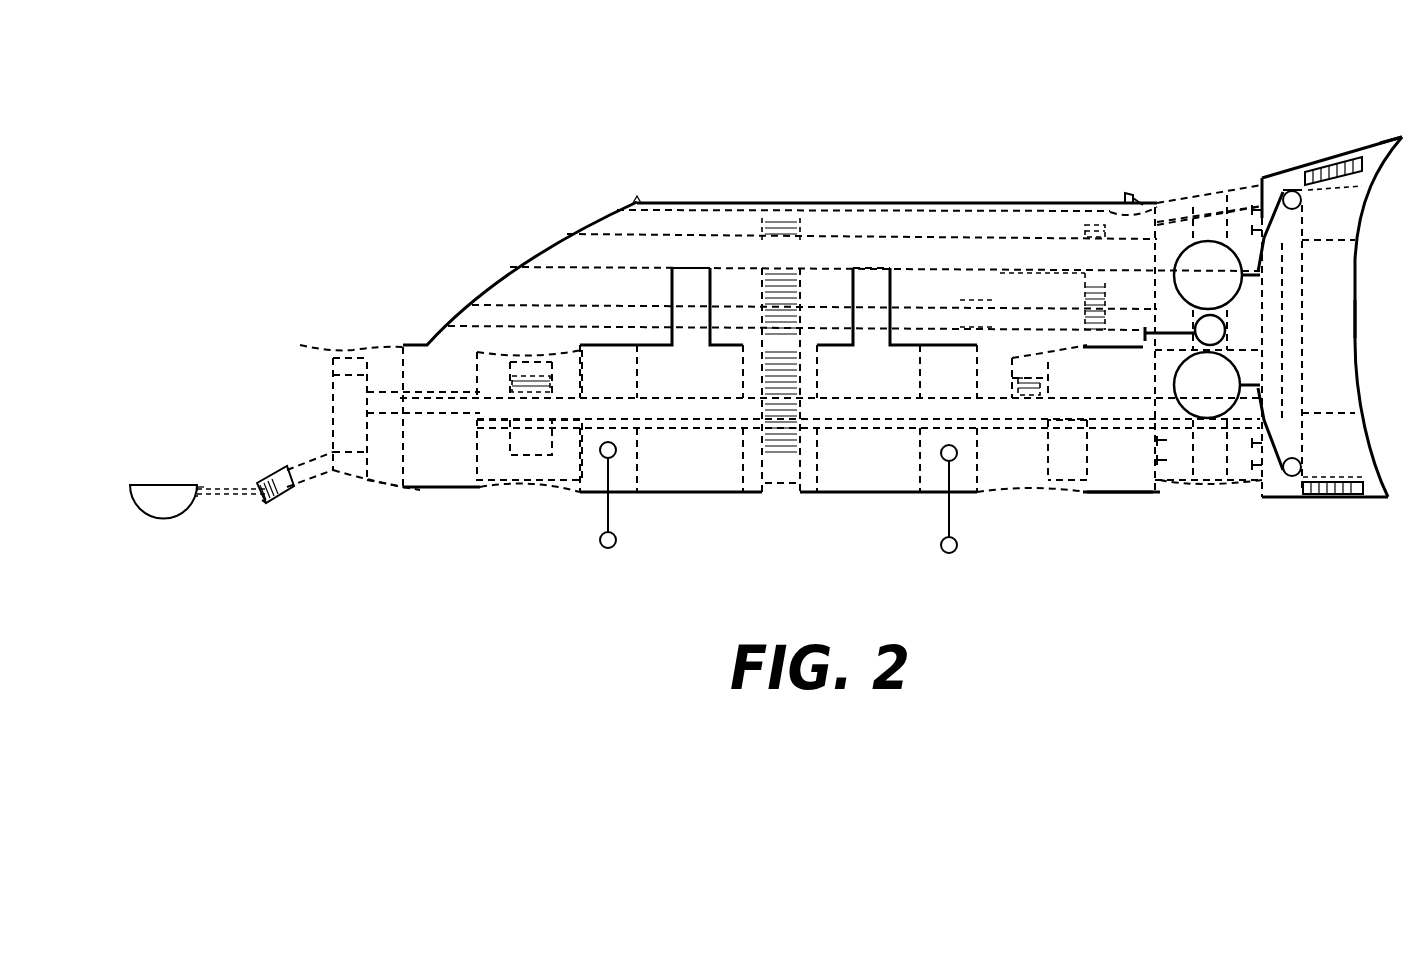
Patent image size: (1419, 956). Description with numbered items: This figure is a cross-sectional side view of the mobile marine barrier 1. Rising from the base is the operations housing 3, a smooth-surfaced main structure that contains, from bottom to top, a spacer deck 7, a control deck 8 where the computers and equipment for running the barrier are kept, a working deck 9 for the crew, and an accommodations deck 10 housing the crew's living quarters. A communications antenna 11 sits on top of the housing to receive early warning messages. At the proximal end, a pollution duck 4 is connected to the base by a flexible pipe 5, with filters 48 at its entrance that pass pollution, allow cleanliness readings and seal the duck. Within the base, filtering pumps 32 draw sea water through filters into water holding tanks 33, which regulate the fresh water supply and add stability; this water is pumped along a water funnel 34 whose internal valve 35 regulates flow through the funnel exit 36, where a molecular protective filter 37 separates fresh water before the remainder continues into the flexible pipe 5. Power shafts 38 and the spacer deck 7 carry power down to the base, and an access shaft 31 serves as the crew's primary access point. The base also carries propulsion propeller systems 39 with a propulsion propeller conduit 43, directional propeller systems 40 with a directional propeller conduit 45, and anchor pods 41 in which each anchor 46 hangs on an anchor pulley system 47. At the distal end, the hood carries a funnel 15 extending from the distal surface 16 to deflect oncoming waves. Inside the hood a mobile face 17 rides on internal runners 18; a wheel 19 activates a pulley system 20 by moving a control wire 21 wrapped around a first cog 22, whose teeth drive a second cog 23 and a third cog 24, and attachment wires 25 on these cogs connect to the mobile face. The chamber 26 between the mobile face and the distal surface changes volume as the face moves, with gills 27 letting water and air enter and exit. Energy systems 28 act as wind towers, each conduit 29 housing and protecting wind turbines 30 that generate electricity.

The mobile marine barrier 1 is at (318, 150).
The operations housing 3 is at (571, 235).
The pollution duck 4 is at (165, 519).
The flexible pipe 5 is at (225, 500).
The spacer deck 7 is at (977, 321).
The control deck 8 is at (978, 293).
The working deck 9 is at (1035, 287).
The accommodations deck 10 is at (1033, 224).
The communications antenna 11 is at (1127, 197).
The funnel 15 is at (1384, 142).
The distal surface 16 is at (1358, 258).
The mobile face 17 is at (1303, 413).
The internal runners 18 is at (1310, 188).
The wheel 19 is at (1145, 340).
The pulley system 20 is at (1156, 394).
The control wire 21 is at (1168, 328).
The first cog 22 is at (1227, 330).
The second cog 23 is at (1228, 250).
The third cog 24 is at (1228, 411).
The attachment wires 25 is at (1253, 268).
The chamber 26 is at (1328, 266).
The gills 27 is at (1341, 162).
The energy systems 28 is at (1195, 505).
The conduit 29 is at (1207, 223).
The wind turbines 30 is at (1257, 215).
The access shaft 31 is at (778, 498).
The filtering pumps 32 is at (778, 460).
The water holding tanks 33 is at (778, 371).
The water funnel 34 is at (528, 422).
The internal valve 35 is at (415, 408).
The funnel exit 36 is at (300, 345).
The molecular protective filter 37 is at (262, 483).
The power shafts 38 is at (778, 306).
The propulsion propeller systems 39 is at (368, 488).
The directional propeller systems 40 is at (528, 489).
The anchor pods 41 is at (617, 546).
The propulsion propeller conduit 43 is at (350, 408).
The directional propeller conduit 45 is at (530, 390).
The anchor 46 is at (617, 540).
The anchor pulley system 47 is at (604, 456).
The filters 48 is at (200, 488).